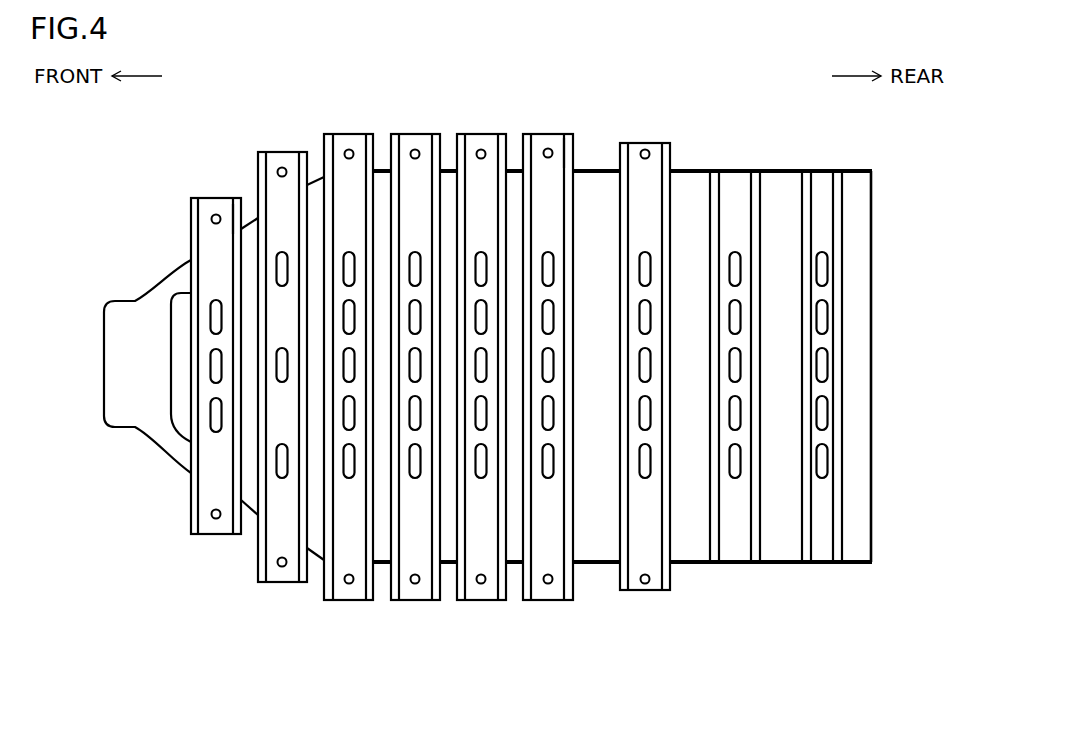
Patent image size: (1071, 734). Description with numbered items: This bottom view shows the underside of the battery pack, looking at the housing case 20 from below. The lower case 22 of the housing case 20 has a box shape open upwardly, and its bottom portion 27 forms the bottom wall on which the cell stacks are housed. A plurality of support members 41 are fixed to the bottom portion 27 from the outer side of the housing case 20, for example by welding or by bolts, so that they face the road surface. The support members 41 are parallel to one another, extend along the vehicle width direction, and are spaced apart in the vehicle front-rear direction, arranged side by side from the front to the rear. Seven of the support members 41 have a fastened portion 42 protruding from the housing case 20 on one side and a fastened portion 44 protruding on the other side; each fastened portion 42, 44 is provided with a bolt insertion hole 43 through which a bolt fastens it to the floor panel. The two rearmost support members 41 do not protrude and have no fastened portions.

The housing case 20 is at (838, 331).
The lower case 22 is at (858, 170).
The bottom portion 27 is at (688, 193).
The support member 41 is at (225, 536).
The fastened portion 42 is at (212, 498).
The bolt insertion hole 43 is at (211, 219).
The fastened portion 44 is at (216, 213).